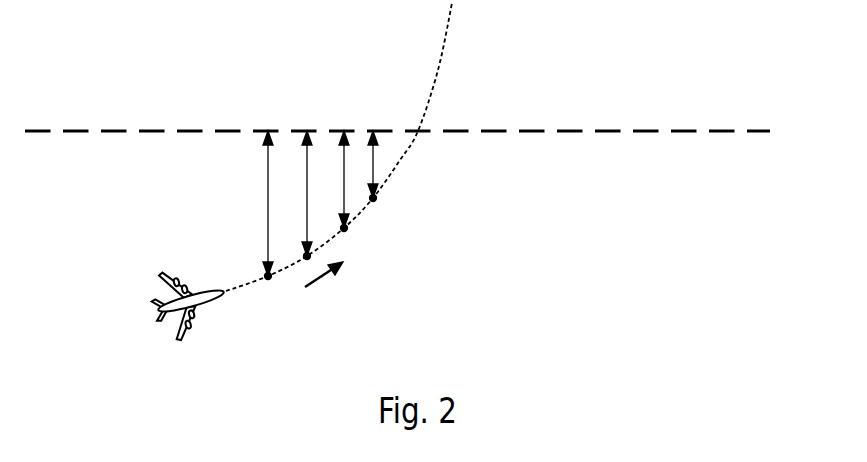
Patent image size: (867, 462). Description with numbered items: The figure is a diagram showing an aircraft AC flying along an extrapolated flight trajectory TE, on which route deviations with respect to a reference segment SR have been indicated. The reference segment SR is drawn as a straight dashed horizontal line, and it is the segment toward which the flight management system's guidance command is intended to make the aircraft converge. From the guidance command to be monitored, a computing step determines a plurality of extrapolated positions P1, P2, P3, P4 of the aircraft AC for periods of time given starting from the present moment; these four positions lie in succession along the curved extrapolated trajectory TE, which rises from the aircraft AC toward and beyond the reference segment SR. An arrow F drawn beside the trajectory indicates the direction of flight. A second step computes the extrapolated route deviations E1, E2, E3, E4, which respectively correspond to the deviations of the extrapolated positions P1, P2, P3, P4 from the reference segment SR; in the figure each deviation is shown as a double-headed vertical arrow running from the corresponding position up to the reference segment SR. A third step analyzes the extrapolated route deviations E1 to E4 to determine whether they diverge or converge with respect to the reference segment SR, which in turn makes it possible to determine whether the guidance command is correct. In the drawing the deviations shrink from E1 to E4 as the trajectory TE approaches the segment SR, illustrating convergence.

The reference segment SR is at (717, 133).
The extrapolated trajectory TE is at (447, 48).
The aircraft AC is at (181, 315).
The extrapolated position P1 is at (266, 280).
The extrapolated position P2 is at (305, 260).
The extrapolated position P3 is at (348, 230).
The extrapolated position P4 is at (377, 198).
The extrapolated route deviation E1 is at (268, 185).
The extrapolated route deviation E2 is at (307, 218).
The extrapolated route deviation E3 is at (345, 180).
The extrapolated route deviation E4 is at (374, 162).
The arrow indicating direction of flight F is at (318, 280).